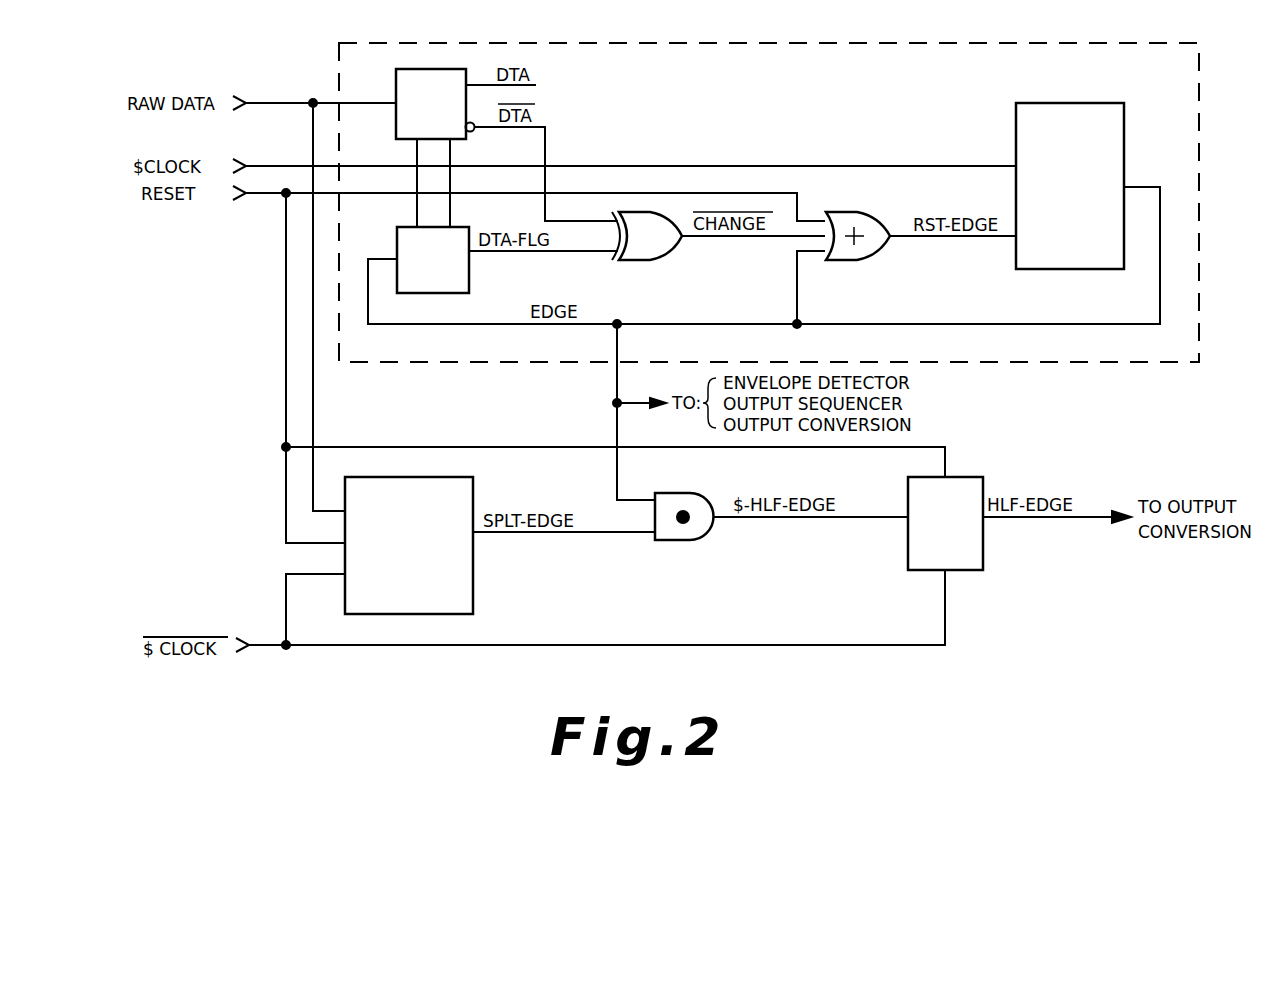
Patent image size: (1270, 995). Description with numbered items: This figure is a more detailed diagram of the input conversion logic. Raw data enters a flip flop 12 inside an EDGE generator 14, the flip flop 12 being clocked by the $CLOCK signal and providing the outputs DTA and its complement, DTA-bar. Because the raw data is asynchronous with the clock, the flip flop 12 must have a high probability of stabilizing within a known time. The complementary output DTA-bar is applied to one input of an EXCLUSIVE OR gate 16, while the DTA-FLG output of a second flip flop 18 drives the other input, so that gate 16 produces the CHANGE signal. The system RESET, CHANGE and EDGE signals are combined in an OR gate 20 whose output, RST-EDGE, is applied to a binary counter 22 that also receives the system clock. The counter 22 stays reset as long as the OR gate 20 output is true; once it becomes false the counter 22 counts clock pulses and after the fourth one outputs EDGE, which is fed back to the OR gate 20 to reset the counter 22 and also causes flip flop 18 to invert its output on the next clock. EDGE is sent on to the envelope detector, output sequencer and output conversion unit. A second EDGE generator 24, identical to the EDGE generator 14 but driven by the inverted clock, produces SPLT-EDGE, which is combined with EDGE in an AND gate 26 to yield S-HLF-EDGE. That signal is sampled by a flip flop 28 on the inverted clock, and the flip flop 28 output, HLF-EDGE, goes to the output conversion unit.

The flip flop 12 is at (446, 68).
The EDGE generator 14 is at (860, 42).
The EXCLUSIVE OR gate 16 is at (672, 254).
The second flip flop 18 is at (460, 226).
The OR gate 20 is at (875, 214).
The binary counter 22 is at (1112, 102).
The EDGE generator 24 is at (465, 476).
The AND gate 26 is at (690, 492).
The flip flop 28 is at (970, 476).